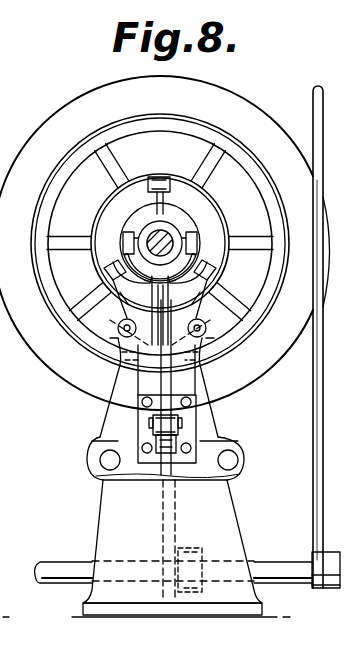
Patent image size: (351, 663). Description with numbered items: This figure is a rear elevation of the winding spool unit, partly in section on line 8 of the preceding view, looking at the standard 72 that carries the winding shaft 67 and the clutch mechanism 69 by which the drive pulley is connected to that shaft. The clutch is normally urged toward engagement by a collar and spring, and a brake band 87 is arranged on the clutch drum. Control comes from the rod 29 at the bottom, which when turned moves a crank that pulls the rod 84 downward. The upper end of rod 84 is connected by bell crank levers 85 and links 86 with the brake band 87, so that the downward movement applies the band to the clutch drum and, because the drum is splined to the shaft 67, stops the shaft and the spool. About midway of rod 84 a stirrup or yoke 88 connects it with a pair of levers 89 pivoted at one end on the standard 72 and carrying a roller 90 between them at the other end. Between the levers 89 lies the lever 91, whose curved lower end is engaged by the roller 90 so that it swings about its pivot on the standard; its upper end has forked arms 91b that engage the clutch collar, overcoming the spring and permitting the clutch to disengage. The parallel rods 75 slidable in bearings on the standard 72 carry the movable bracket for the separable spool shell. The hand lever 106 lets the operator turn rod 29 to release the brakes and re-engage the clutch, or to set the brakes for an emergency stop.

The section line 8— 8 is at (0, 476).
The rod 29 is at (58, 562).
The shaft 67 is at (171, 233).
The clutch mechanism 69 is at (140, 188).
The standard 72 is at (108, 509).
The parallel rods 75 is at (99, 458).
The rod 84 is at (242, 472).
The bell crank levers 85 is at (117, 308).
The links 86 is at (118, 324).
The brake band 87 is at (106, 207).
The stirrup or yoke 88 is at (180, 428).
The levers 89 is at (155, 411).
The roller 90 is at (156, 432).
The lever 91 is at (189, 379).
The forked arms 91b is at (229, 219).
The hand lever 106 is at (312, 104).